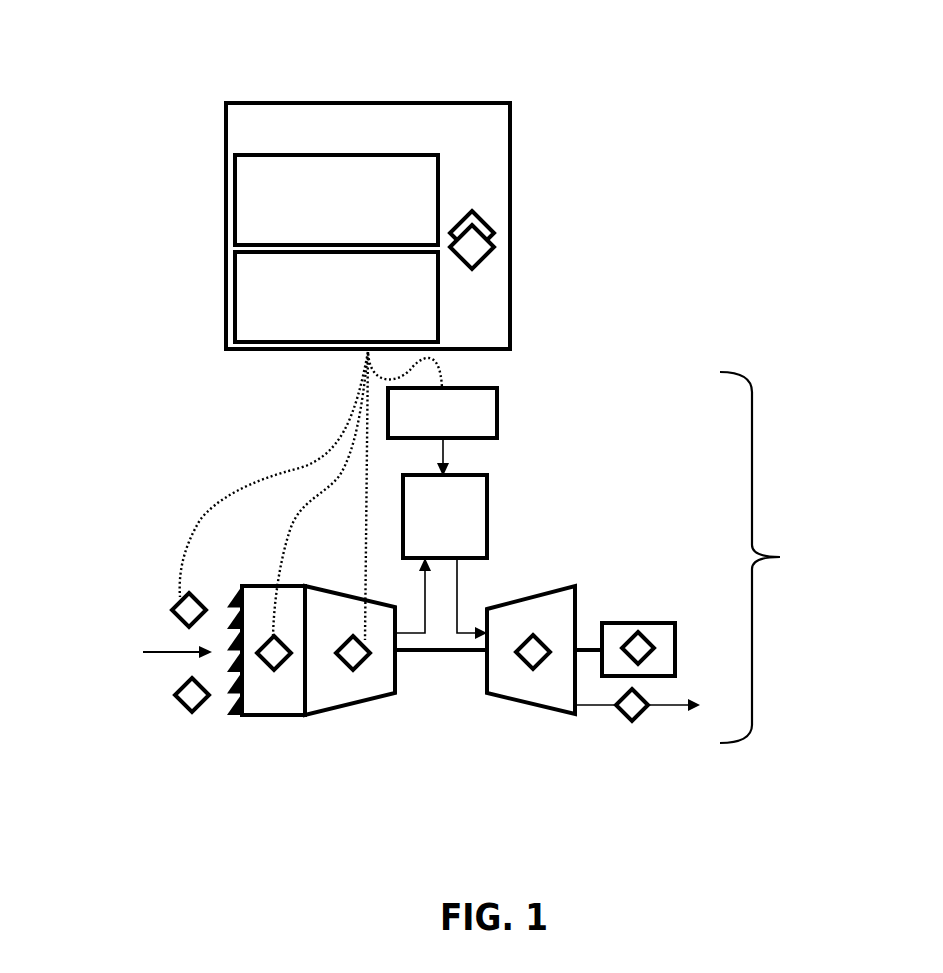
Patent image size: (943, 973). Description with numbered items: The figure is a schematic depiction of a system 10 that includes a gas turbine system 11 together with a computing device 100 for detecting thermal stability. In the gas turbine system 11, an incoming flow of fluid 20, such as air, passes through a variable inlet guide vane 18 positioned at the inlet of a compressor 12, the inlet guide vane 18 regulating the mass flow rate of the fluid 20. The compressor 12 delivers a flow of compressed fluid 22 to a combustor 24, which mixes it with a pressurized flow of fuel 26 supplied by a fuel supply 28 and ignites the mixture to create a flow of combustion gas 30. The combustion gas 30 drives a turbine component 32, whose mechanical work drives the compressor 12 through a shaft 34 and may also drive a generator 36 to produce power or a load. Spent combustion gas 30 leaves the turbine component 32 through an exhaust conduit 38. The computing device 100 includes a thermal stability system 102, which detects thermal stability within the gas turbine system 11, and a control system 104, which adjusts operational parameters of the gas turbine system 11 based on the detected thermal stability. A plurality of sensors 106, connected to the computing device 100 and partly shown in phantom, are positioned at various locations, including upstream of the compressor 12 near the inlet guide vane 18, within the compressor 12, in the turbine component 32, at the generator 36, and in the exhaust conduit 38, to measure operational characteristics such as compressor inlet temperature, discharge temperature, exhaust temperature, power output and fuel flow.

The system 10 is at (471, 62).
The gas turbine system 11 is at (780, 557).
The compressor 12 is at (338, 708).
The inlet guide vane 18 is at (250, 715).
The flow of fluid 20 is at (163, 650).
The flow of compressed fluid 22 is at (415, 633).
The combustor 24 is at (433, 526).
The flow of fuel 26 is at (443, 457).
The fuel supply 28 is at (431, 422).
The flow of combustion gas 30 is at (467, 633).
The turbine component 32 is at (550, 710).
The shaft 34 is at (426, 652).
The generator 36 is at (653, 623).
The exhaust conduit 38 is at (683, 713).
The computing device 100 is at (489, 136).
The thermal stability system 102 is at (393, 222).
The control system 104 is at (392, 324).
The sensors 106 is at (472, 269).